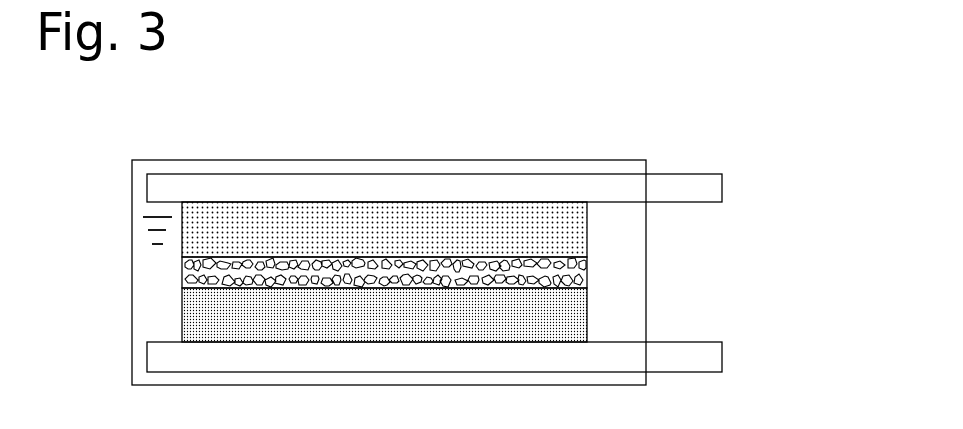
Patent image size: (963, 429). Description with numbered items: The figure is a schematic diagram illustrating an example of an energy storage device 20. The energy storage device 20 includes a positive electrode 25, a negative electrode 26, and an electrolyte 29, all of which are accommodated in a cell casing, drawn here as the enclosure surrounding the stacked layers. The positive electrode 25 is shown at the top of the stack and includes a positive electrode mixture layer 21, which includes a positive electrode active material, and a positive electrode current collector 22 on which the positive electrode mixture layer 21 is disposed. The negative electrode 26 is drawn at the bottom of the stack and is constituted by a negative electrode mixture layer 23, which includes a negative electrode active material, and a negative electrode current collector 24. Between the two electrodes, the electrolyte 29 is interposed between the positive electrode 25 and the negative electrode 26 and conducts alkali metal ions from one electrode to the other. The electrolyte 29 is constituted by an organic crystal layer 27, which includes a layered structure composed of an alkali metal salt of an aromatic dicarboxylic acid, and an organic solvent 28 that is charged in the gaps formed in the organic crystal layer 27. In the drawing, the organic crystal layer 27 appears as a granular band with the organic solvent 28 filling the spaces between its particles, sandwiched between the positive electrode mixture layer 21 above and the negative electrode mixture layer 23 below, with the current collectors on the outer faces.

The energy storage device 20 is at (710, 148).
The positive electrode mixture layer 21 is at (587, 226).
The positive electrode current collector 22 is at (722, 179).
The negative electrode mixture layer 23 is at (587, 328).
The negative electrode current collector 24 is at (722, 358).
The positive electrode 25 is at (812, 157).
The negative electrode 26 is at (812, 312).
The organic crystal layer 27 is at (587, 257).
The organic solvent 28 is at (590, 275).
The electrolyte 29 is at (812, 233).